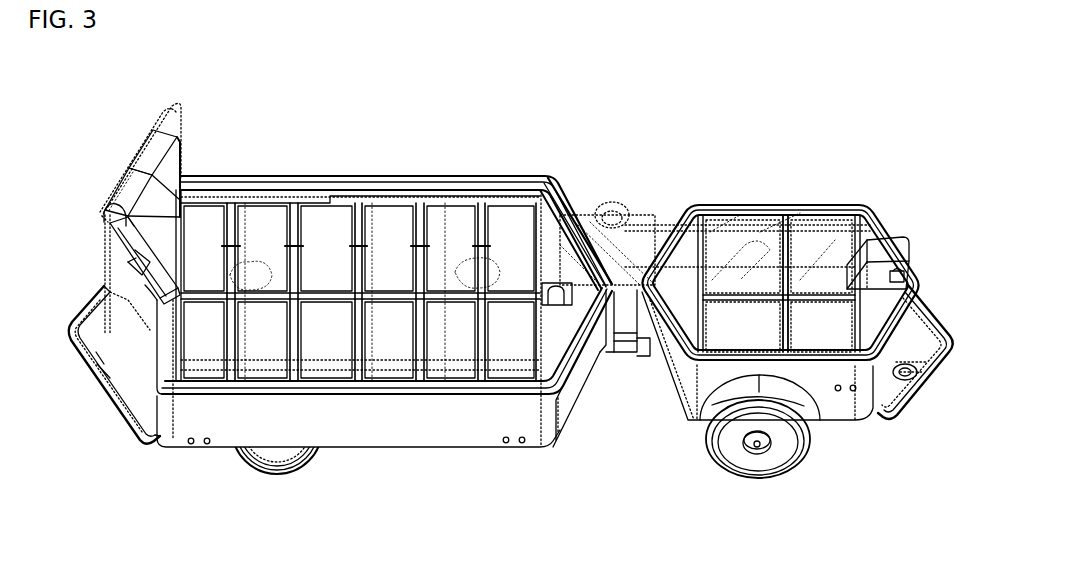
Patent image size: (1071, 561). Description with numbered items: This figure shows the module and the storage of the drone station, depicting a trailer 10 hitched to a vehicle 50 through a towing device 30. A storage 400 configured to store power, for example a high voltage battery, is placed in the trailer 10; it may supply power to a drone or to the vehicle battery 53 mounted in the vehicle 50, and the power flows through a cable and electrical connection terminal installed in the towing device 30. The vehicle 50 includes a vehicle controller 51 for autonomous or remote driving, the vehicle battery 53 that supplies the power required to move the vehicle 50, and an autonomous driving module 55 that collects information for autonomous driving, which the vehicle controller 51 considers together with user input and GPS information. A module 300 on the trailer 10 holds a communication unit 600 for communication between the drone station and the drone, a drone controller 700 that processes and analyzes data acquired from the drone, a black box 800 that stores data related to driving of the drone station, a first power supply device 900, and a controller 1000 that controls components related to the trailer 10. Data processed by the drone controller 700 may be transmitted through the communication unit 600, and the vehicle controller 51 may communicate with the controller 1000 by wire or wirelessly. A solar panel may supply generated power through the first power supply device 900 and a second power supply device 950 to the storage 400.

The trailer 10 is at (207, 455).
The towing device 30 is at (625, 355).
The vehicle 50 is at (836, 428).
The vehicle controller 51 is at (820, 250).
The vehicle battery 53 is at (740, 272).
The autonomous driving module 55 is at (890, 246).
The module 300 is at (143, 137).
The storage 400 is at (394, 213).
The communication unit 600 is at (140, 158).
The drone controller 700 is at (125, 187).
The black box 800 is at (133, 267).
The first power supply device 900 is at (112, 209).
The second power supply device 950 is at (578, 220).
The controller 1000 is at (120, 232).